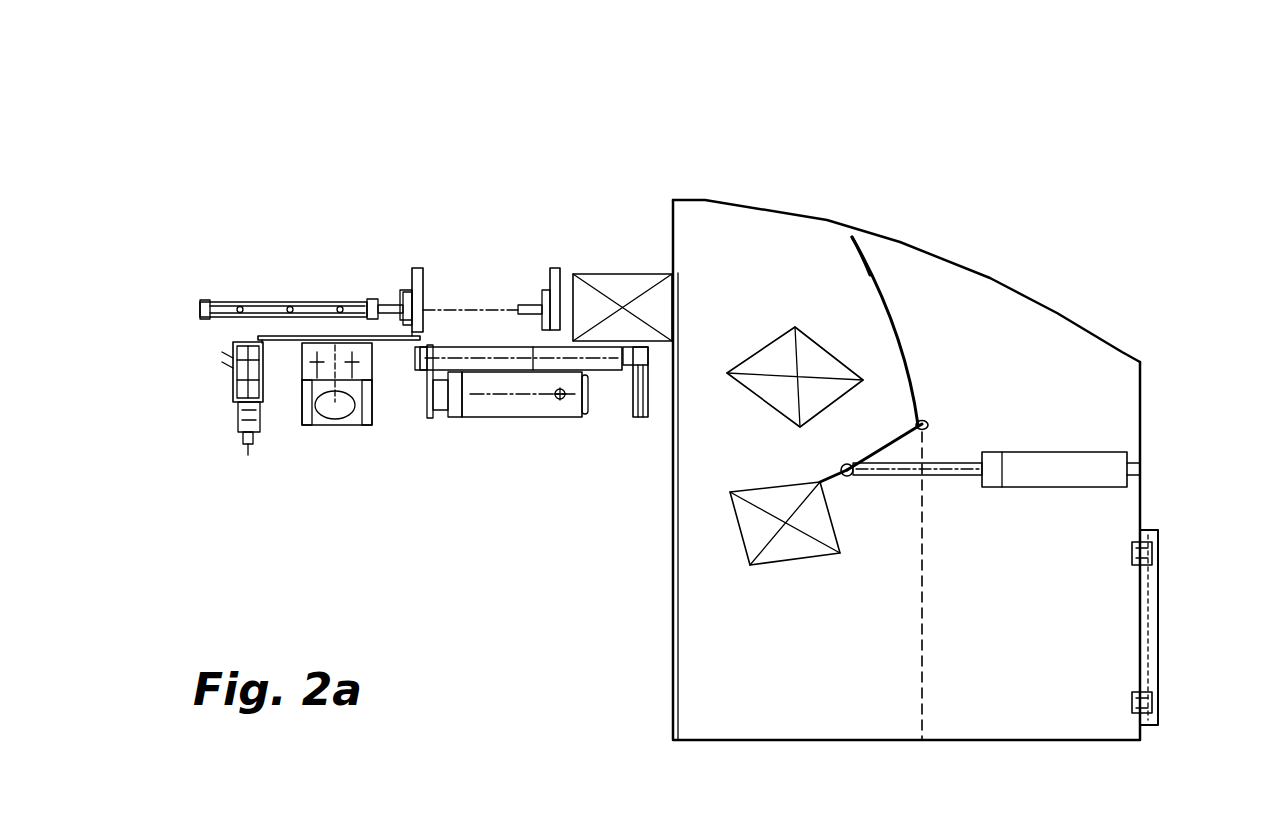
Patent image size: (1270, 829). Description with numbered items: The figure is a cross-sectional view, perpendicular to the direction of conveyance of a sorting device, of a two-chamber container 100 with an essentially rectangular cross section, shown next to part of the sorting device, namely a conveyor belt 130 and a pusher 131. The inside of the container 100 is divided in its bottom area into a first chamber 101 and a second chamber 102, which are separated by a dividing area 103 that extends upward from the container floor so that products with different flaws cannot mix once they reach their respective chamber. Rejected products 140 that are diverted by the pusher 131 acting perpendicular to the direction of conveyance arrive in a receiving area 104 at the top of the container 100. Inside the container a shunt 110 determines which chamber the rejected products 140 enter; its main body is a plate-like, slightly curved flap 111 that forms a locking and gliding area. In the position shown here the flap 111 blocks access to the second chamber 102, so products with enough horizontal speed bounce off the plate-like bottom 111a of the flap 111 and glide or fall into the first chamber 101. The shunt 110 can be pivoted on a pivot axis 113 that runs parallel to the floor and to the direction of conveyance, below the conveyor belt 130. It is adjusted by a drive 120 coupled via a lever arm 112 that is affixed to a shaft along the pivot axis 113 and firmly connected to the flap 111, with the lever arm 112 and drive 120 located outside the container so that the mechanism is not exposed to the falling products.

The two-chamber container 100 is at (642, 680).
The first chamber 101 is at (800, 720).
The second chamber 102 is at (1031, 720).
The dividing area 103 is at (908, 690).
The receiving area 104 is at (738, 295).
The shunt 110 is at (930, 393).
The flap 111 is at (900, 337).
The plate-like bottom 111a is at (848, 278).
The lever arm 112 is at (910, 448).
The pivot axis 113 is at (945, 425).
The drive 120 is at (1048, 495).
The conveyor belt 130 is at (485, 365).
The pusher 131 is at (547, 268).
The rejected products 140 is at (740, 550).